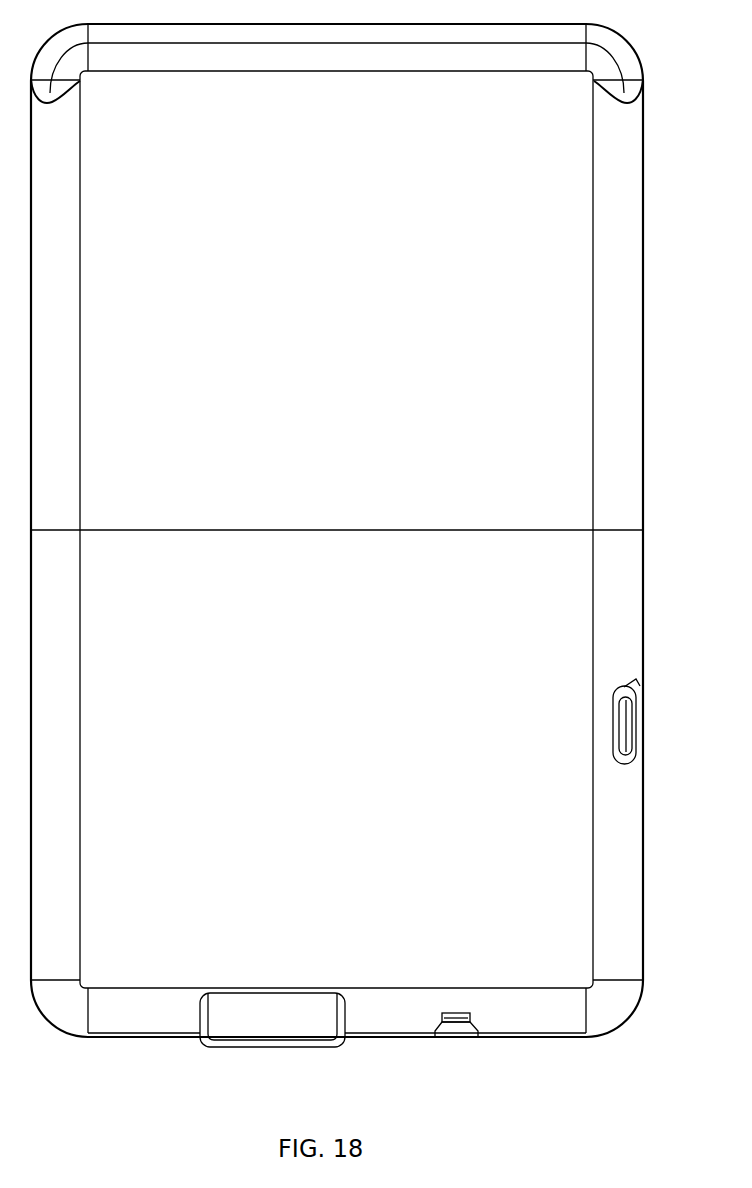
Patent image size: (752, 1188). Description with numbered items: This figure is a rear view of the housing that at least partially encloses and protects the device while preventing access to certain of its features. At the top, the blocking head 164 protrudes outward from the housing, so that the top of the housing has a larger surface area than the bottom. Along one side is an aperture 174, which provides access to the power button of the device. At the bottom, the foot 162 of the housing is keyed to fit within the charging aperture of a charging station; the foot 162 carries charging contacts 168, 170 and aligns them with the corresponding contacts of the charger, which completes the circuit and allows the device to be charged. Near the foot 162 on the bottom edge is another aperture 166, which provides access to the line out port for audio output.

The foot 162 is at (250, 1058).
The blocking head 164 is at (611, 53).
The aperture 166 is at (460, 1032).
The charging contact 168 is at (207, 1038).
The charging contact 170 is at (310, 1050).
The aperture 174 is at (642, 683).